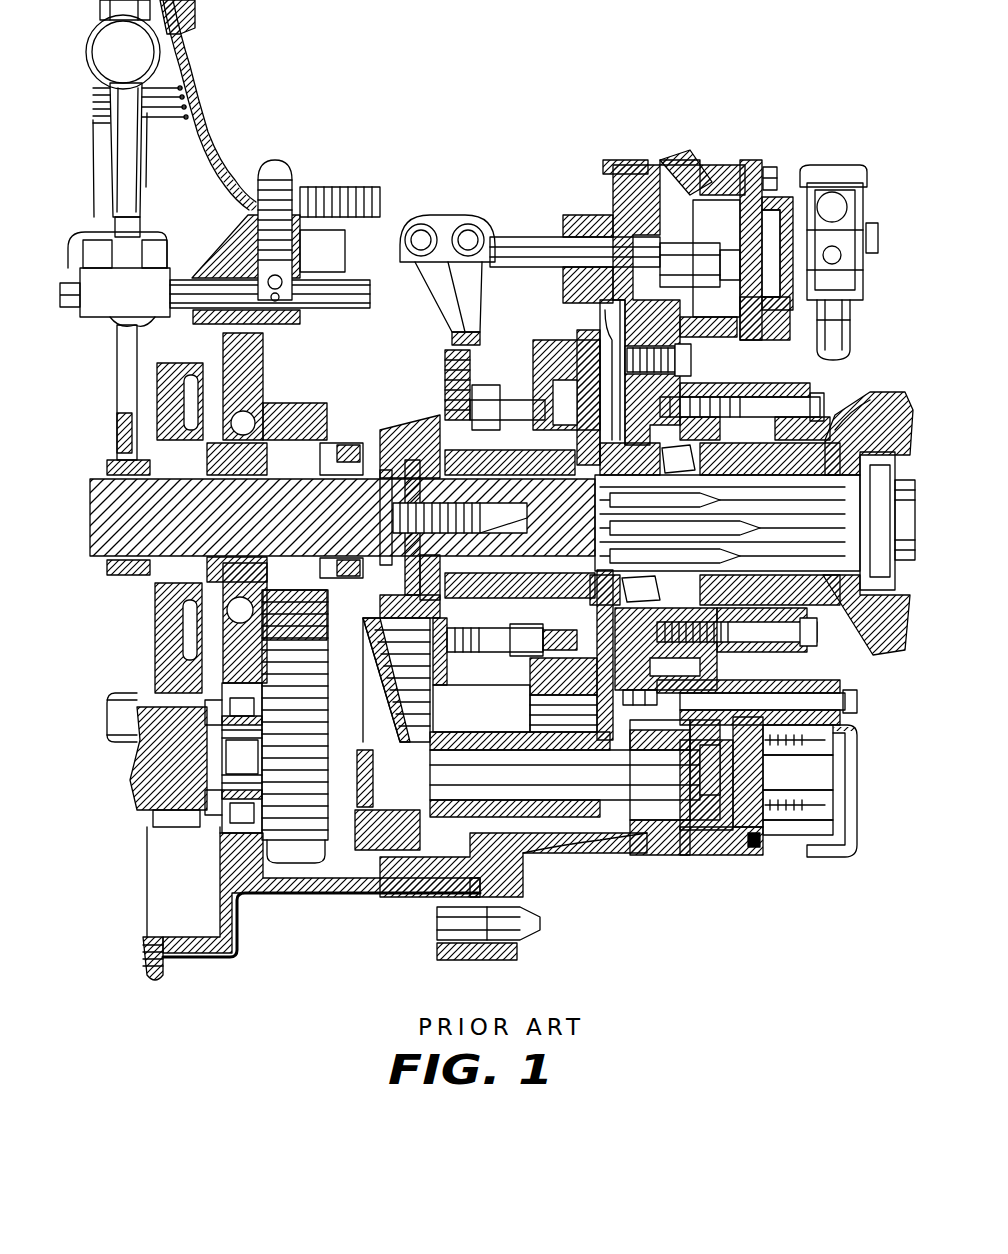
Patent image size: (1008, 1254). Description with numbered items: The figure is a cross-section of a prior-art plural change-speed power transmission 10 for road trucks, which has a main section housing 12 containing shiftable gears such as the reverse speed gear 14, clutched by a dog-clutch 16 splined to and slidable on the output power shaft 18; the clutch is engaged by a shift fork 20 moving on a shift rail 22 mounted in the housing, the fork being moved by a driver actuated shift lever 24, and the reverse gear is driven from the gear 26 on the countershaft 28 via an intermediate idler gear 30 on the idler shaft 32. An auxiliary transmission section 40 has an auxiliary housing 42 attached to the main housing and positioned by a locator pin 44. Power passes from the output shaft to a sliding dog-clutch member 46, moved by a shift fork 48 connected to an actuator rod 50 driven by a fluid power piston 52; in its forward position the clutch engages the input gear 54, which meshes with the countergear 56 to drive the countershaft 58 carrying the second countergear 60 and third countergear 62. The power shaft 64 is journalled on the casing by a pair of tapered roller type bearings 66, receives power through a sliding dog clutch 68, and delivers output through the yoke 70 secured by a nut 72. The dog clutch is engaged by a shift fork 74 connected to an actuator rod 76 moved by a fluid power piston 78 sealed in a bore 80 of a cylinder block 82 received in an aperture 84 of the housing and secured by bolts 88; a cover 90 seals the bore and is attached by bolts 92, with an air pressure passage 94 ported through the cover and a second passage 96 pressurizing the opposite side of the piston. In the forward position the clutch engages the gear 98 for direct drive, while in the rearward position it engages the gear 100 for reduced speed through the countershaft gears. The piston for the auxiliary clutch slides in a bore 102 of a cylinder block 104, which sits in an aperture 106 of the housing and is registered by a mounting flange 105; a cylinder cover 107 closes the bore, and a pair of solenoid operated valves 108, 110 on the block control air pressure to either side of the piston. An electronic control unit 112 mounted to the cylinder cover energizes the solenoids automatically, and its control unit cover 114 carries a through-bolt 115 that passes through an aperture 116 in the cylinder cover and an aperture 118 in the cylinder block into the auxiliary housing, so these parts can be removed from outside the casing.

The plural change-speed power transmission 10 is at (135, 598).
The main section housing 12 is at (340, 235).
The reverse speed gear 14 is at (158, 395).
The dog-clutch 16 is at (130, 430).
The output power shaft 18 is at (115, 560).
The shift fork 20 is at (115, 370).
The shift rail 22 is at (177, 278).
The shift lever 24 is at (160, 175).
The gear 26 is at (186, 827).
The countershaft 28 is at (135, 785).
The intermediate idler gear 30 is at (140, 680).
The idler shaft 32 is at (125, 693).
The auxiliary transmission section 40 is at (620, 868).
The auxiliary housing 42 is at (612, 160).
The locator pin 44 is at (542, 925).
The sliding dog-clutch member 46 is at (352, 437).
The shift fork 48 is at (372, 615).
The actuator rod 50 is at (505, 783).
The fluid power piston 52 is at (728, 855).
The input gear 54 is at (316, 383).
The countergear 56 is at (333, 880).
The countershaft 58 is at (360, 790).
The second countergear 60 is at (395, 880).
The third countergear 62 is at (595, 735).
The power shaft 64 is at (630, 480).
The tapered roller type bearings 66 is at (683, 478).
The sliding dog clutch 68 is at (517, 400).
The yoke 70 is at (882, 393).
The nut 72 is at (850, 400).
The shift fork 74 is at (432, 318).
The actuator rod 76 is at (527, 237).
The fluid power piston 78 is at (712, 190).
The bore 80 is at (700, 258).
The cylinder block 82 is at (583, 217).
The aperture 84 is at (625, 187).
The bolts 88 is at (692, 358).
The cover 90 is at (770, 315).
The bolts 92 is at (778, 168).
The air pressure passage 94 is at (785, 253).
The passage 96 is at (676, 160).
The gear 98 is at (418, 400).
The gear 100 is at (530, 683).
The bore 102 is at (700, 715).
The cylinder block 104 is at (603, 853).
The mounting flange 105 is at (660, 860).
The aperture 106 is at (640, 720).
The cylinder cover 107 is at (715, 865).
The solenoid operated valve 108 is at (850, 722).
The solenoid operated valve 110 is at (788, 850).
The electronic control unit 112 is at (805, 850).
The control unit cover 114 is at (817, 680).
The through-bolt 115 is at (858, 700).
The aperture 116 is at (732, 680).
The aperture 118 is at (658, 700).